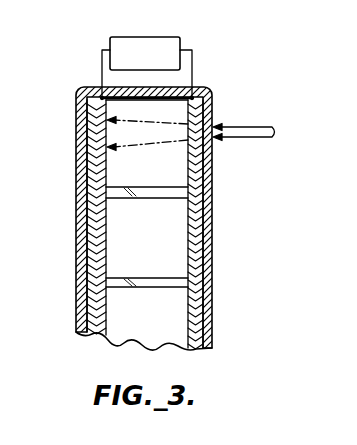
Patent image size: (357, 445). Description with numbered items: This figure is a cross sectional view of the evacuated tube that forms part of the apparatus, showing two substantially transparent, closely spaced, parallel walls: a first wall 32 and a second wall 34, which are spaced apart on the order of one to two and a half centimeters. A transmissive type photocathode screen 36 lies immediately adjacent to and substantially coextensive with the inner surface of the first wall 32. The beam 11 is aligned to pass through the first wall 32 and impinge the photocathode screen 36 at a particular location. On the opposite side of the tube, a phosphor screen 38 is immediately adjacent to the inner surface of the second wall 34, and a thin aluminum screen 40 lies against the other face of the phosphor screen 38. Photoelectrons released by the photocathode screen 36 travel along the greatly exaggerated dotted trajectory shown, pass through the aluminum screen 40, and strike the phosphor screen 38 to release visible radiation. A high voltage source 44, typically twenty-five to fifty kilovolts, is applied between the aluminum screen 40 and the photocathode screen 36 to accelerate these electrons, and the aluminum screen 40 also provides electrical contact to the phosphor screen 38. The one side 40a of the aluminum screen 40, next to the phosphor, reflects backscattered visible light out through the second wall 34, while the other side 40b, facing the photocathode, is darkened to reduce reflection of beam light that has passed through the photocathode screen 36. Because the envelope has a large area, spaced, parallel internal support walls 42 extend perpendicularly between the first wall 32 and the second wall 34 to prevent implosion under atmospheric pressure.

The beam 11 is at (243, 132).
The first wall 32 is at (205, 266).
The second wall 34 is at (84, 263).
The photocathode screen 36 is at (190, 218).
The phosphor screen 38 is at (92, 168).
The aluminum screen 40 is at (100, 181).
The one side of the aluminum screen 40a is at (98, 243).
The other side of the aluminum screen 40b is at (106, 219).
The internal support walls 42 is at (122, 288).
The high voltage source 44 is at (165, 37).